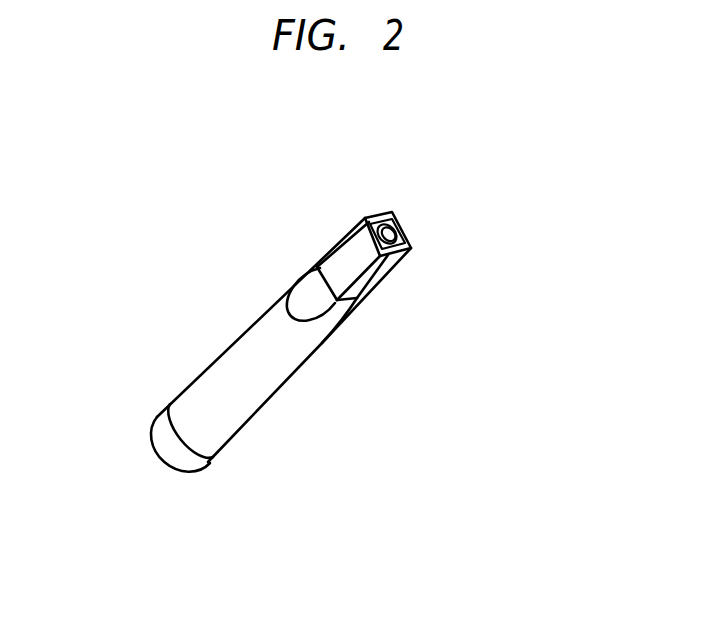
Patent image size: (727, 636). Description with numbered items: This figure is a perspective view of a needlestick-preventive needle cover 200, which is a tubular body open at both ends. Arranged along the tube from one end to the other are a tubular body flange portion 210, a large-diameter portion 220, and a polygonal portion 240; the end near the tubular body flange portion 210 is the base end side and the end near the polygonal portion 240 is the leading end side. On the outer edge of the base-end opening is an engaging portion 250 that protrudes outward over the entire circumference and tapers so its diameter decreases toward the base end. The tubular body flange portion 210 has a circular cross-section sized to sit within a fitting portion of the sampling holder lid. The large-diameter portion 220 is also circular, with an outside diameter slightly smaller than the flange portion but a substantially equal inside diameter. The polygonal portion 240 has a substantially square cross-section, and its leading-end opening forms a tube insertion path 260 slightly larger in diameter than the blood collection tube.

The needlestick-preventive needle cover 200 is at (602, 146).
The tubular body flange portion 210 is at (157, 423).
The large-diameter portion 220 is at (273, 394).
The polygonal portion 240 is at (384, 276).
The engaging portion 250 is at (160, 463).
The tube insertion path 260 is at (403, 219).